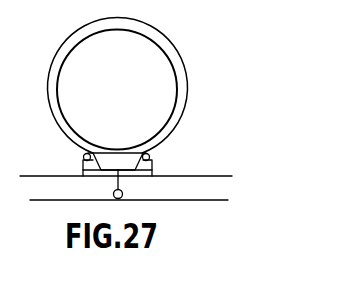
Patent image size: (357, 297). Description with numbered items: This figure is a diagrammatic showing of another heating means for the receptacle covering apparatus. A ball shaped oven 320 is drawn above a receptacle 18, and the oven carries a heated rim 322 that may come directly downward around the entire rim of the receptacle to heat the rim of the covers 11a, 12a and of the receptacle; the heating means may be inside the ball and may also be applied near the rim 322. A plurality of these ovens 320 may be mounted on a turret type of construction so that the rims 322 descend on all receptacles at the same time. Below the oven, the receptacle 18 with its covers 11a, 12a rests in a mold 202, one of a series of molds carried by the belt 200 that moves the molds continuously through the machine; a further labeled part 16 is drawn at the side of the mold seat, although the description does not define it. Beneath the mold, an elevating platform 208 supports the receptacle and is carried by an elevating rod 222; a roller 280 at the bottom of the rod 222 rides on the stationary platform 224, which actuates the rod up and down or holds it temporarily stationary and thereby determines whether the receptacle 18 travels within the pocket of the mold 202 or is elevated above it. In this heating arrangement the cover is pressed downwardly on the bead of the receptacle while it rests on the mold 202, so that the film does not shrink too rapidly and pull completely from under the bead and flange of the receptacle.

The cover 11a is at (104, 153).
The cover 12a is at (104, 153).
The ball shaped oven 320 is at (186, 84).
The heated rim 322 is at (138, 151).
The pivot pin 16 is at (161, 151).
The receptacle 18 is at (96, 161).
The mold 202 is at (145, 170).
The belt 200 is at (210, 175).
The elevating platform 208 is at (121, 170).
The roller 280 is at (113, 193).
The elevating rod 222 is at (125, 189).
The stationary platform 224 is at (212, 200).